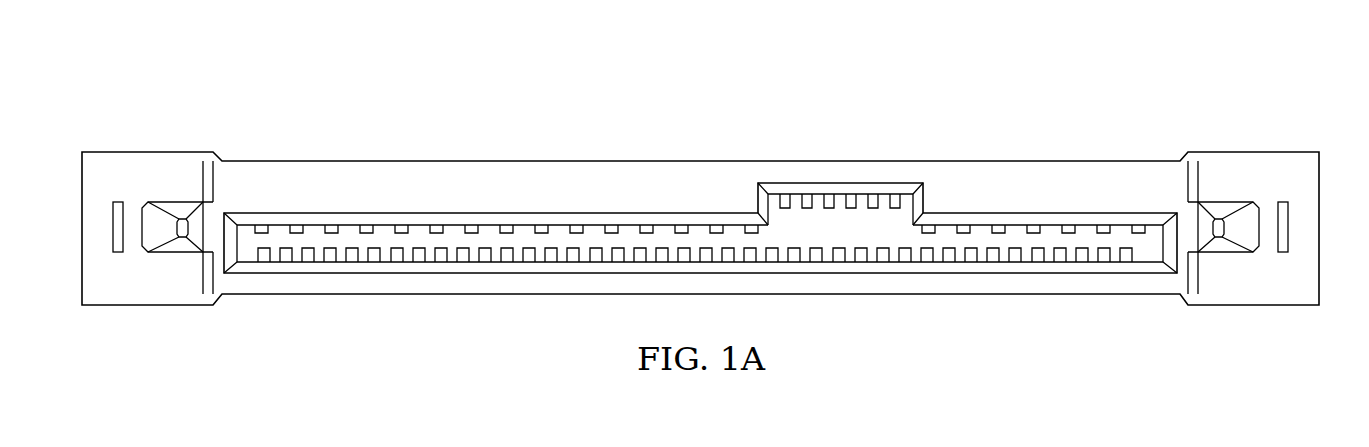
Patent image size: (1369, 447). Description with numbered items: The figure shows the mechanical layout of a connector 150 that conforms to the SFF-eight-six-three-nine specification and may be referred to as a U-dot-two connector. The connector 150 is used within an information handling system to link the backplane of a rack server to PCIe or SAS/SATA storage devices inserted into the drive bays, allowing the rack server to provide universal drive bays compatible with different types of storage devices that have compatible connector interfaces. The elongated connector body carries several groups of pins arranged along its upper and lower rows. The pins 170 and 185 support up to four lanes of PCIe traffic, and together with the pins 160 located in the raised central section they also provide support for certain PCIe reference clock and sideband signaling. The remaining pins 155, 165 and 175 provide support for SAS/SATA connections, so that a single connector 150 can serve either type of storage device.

The connector 150 is at (411, 83).
The pins 155 is at (250, 207).
The pins 160 is at (923, 183).
The pins 165 is at (1155, 207).
The pins 170 is at (254, 273).
The pins 175 is at (763, 273).
The pins 185 is at (1135, 273).